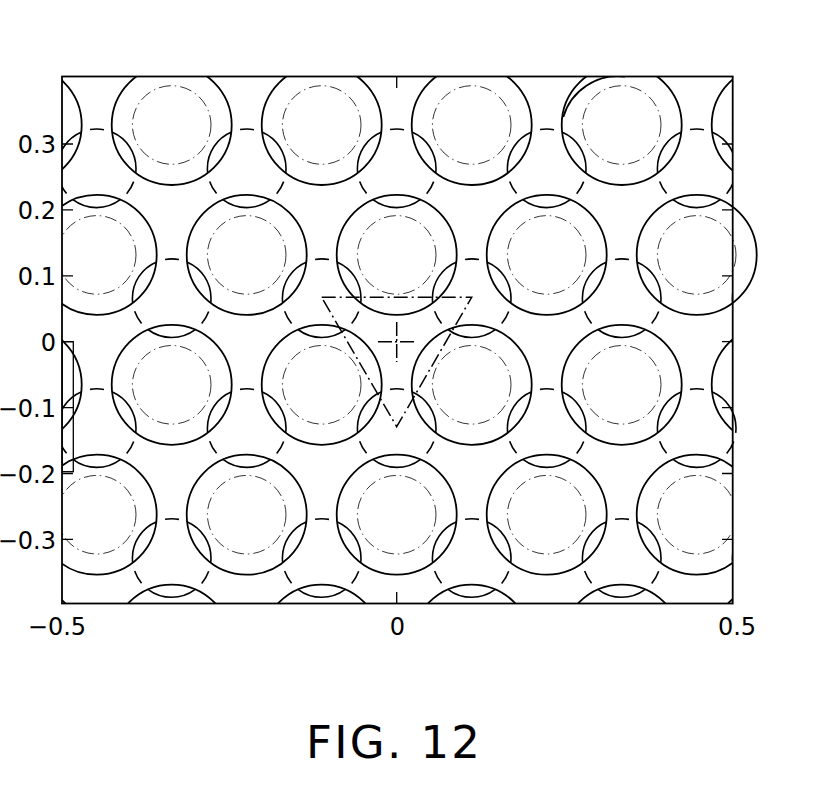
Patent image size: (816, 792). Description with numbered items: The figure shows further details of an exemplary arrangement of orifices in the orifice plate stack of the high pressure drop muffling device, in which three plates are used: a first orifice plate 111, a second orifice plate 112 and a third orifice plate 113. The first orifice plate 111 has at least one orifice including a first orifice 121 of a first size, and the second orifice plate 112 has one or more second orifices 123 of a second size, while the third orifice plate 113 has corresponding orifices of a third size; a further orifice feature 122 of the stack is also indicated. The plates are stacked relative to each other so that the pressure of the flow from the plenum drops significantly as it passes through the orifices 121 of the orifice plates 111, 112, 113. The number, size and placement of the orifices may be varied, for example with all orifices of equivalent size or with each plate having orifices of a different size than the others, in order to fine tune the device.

The first orifice plate 111 is at (686, 290).
The second orifice plate 112 is at (676, 354).
The third orifice plate 113 is at (688, 436).
The first orifice 121 is at (635, 150).
The lens-shaped hole overlap 122 is at (548, 196).
The second orifice 123 is at (623, 84).